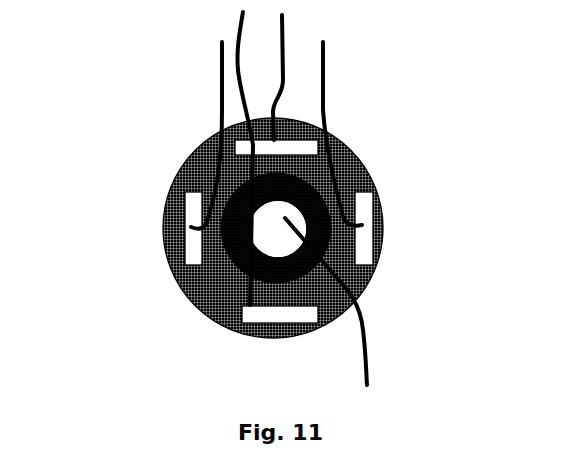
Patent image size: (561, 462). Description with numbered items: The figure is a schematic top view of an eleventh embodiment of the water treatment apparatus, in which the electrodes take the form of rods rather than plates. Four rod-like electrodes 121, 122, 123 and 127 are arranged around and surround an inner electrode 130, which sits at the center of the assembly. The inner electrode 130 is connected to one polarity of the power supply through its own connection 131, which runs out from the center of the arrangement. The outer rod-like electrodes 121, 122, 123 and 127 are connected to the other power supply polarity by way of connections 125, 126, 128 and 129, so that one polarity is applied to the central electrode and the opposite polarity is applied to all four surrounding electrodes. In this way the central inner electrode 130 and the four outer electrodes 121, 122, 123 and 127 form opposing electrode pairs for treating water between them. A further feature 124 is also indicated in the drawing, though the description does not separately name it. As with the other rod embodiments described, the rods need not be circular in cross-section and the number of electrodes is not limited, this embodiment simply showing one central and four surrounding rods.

The rod-like electrode 121 is at (150, 235).
The rod-like electrode 122 is at (368, 203).
The rod-like electrode 123 is at (253, 149).
The lower wire portion 124 is at (227, 284).
The connection 125 is at (206, 72).
The connection 126 is at (340, 72).
The rod-like electrode 127 is at (258, 318).
The connection 128 is at (301, 13).
The connection 129 is at (223, 27).
The inner electrode 130 is at (288, 242).
The connection 131 is at (385, 342).